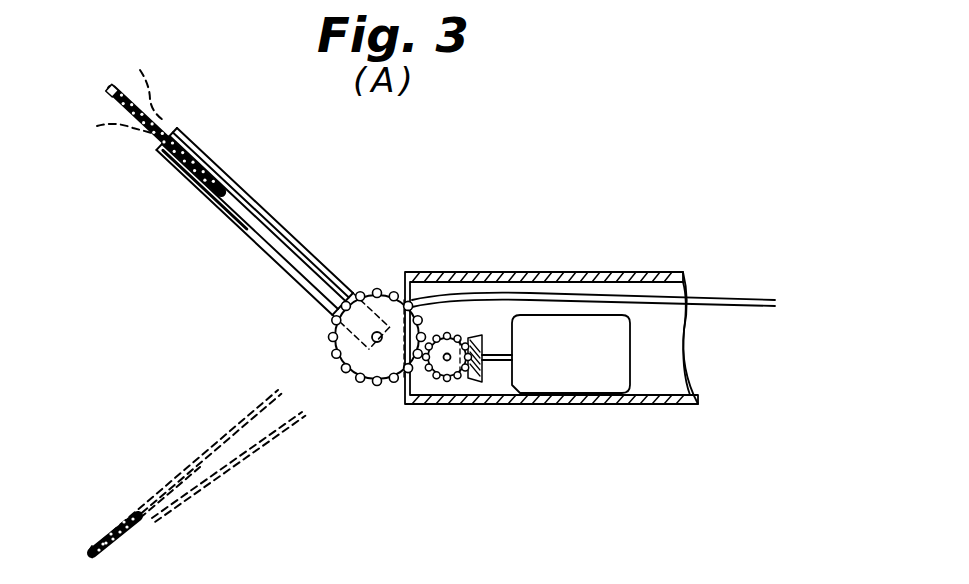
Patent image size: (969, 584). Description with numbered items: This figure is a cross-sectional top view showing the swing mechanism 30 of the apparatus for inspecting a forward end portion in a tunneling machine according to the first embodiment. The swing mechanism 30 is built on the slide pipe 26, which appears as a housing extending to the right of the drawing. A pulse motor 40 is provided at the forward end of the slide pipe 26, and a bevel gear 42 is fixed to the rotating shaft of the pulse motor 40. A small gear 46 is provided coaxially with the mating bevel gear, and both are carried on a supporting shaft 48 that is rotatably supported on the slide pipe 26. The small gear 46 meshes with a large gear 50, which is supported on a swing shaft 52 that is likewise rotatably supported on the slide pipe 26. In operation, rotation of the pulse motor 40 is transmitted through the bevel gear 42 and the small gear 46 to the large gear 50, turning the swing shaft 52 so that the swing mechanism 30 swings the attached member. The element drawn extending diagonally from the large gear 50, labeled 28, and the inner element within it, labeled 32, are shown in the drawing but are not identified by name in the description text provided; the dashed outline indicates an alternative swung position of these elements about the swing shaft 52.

The slide pipe 26 is at (538, 272).
The tube 28 is at (268, 213).
The swing mechanism 30 is at (390, 265).
The inner tube 32 is at (115, 92).
The pulse motor 40 is at (567, 393).
The bevel gear 42 is at (473, 383).
The small gear 46 is at (444, 380).
The supporting shaft 48 is at (448, 355).
The large gear 50 is at (361, 378).
The swing shaft 52 is at (377, 338).